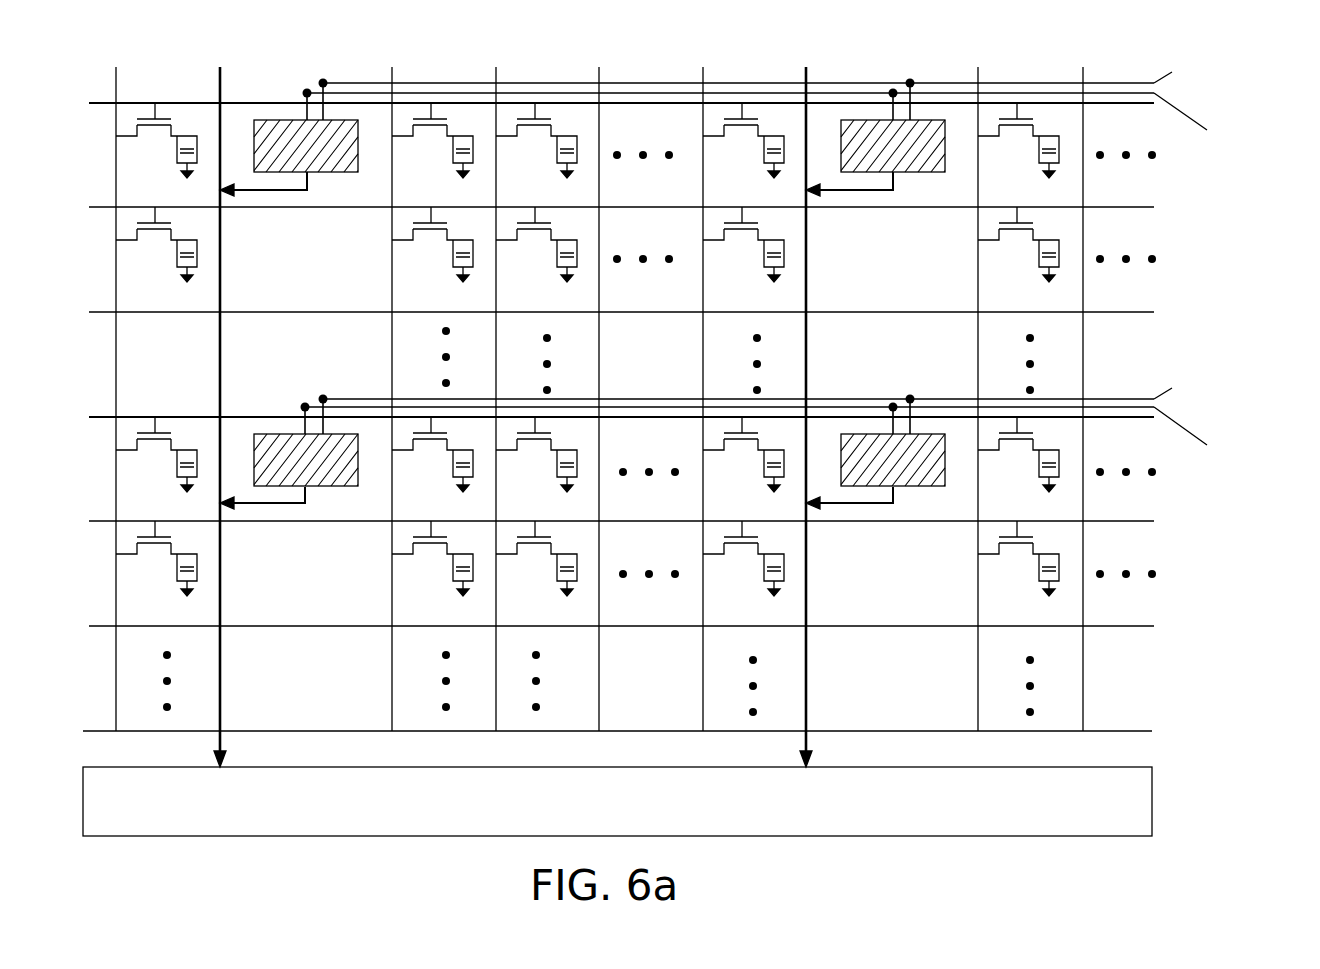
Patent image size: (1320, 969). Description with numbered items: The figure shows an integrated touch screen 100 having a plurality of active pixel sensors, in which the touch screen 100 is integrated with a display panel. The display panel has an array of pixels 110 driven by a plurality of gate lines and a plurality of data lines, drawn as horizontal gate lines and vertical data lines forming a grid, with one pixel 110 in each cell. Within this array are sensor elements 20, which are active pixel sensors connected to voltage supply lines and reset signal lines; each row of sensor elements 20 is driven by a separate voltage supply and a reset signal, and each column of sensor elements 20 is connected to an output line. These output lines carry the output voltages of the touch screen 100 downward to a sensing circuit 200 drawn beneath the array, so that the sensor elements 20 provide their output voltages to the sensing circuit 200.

The touch screen 100 is at (1280, 104).
The pixels 110 is at (118, 173).
The sensor element 20 is at (325, 172).
The sensing circuit 200 is at (1143, 810).